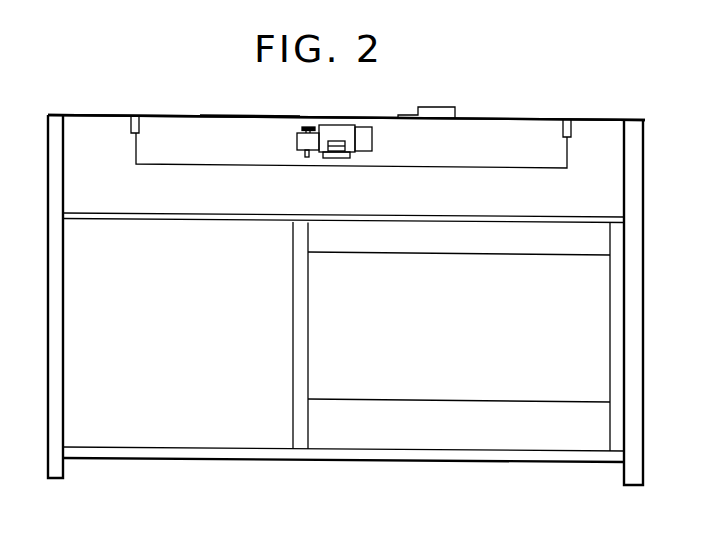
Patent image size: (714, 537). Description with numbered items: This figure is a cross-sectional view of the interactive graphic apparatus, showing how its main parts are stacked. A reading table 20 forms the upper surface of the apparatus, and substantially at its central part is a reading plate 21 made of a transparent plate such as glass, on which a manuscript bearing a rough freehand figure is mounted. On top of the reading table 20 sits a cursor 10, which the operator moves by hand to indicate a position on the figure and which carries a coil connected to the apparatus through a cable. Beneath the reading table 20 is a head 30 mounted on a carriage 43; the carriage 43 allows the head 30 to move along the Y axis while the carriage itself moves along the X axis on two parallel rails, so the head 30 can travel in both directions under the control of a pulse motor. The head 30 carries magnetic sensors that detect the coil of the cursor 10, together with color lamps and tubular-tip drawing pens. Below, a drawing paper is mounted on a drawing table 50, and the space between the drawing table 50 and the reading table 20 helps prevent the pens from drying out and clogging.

The cursor 10 is at (448, 113).
The reading table 20 is at (173, 116).
The reading plate 21 is at (236, 116).
The head 30 is at (342, 133).
The carriage 43 is at (338, 158).
The drawing table 50 is at (250, 167).